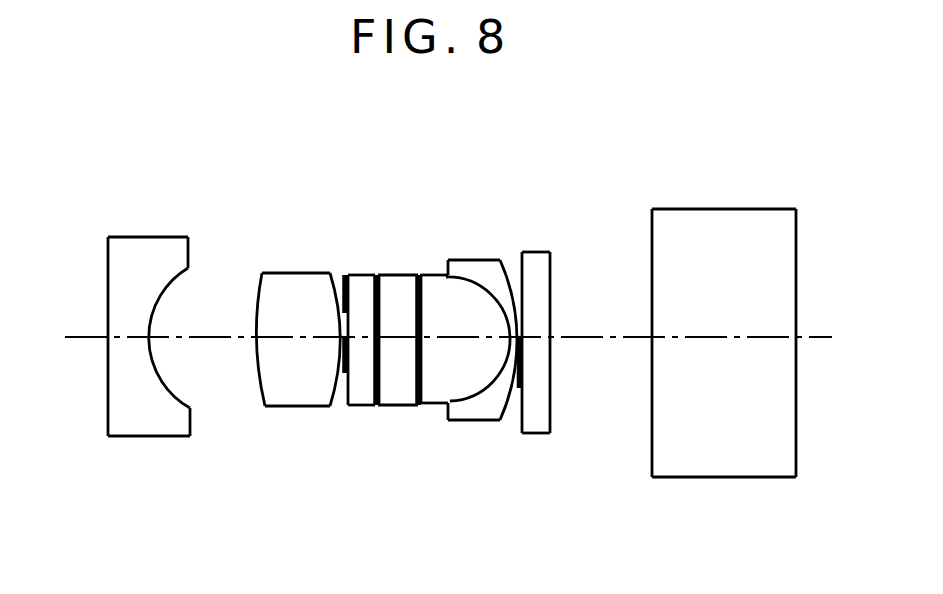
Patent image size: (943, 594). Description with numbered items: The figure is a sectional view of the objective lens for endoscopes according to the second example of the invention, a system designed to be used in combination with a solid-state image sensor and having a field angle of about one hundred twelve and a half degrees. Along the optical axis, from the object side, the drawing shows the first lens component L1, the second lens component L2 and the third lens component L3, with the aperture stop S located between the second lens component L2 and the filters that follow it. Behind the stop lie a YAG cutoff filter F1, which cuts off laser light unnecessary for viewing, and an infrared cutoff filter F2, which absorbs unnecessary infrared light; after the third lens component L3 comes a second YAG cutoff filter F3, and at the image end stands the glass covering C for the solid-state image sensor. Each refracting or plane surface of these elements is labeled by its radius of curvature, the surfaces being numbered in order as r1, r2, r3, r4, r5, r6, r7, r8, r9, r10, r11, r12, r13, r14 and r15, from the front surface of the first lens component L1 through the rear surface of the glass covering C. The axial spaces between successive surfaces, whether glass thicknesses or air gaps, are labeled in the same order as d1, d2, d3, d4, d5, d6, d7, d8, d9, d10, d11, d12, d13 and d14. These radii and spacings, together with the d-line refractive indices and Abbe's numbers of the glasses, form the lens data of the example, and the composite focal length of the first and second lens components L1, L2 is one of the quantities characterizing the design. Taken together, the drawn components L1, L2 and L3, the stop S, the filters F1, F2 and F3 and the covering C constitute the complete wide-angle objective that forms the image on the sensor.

The first lens component L1 is at (129, 237).
The second lens component L2 is at (282, 273).
The third lens component L3 is at (458, 260).
The aperture stop S is at (344, 374).
The YAG cutoff filter F1 is at (355, 406).
The infrared cutoff filter F2 is at (412, 408).
The YAG cutoff filter F3 is at (537, 434).
The glass covering C is at (724, 467).
The radius of curvature of first lens surface r1 is at (107, 259).
The radius of curvature of second lens surface r2 is at (173, 276).
The radius of curvature of third lens surface r3 is at (258, 291).
The radius of curvature of fourth lens surface r4 is at (329, 297).
The radius of curvature of fifth lens surface r5 is at (345, 275).
The radius of curvature of sixth lens surface r6 is at (374, 292).
The radius of curvature of seventh lens surface r7 is at (380, 290).
The radius of curvature of eighth lens surface r8 is at (417, 292).
The radius of curvature of ninth lens surface r9 is at (424, 293).
The radius of curvature of tenth lens surface r10 is at (470, 287).
The radius of curvature of eleventh lens surface r11 is at (504, 261).
The radius of curvature of twelfth lens surface r12 is at (526, 266).
The radius of curvature of thirteenth lens surface r13 is at (552, 273).
The radius of curvature of fourteenth lens surface r14 is at (650, 237).
The radius of curvature of fifteenth lens surface r15 is at (794, 232).
The first space between lens surfaces d1 is at (128, 360).
The second space between lens surfaces d2 is at (202, 360).
The third space between lens surfaces d3 is at (298, 360).
The fourth space between lens surfaces d4 is at (341, 406).
The fifth space between lens surfaces d5 is at (364, 406).
The sixth space between lens surfaces d6 is at (377, 407).
The seventh space between lens surfaces d7 is at (398, 360).
The eighth space between lens surfaces d8 is at (420, 407).
The ninth space between lens surfaces d9 is at (455, 364).
The tenth space between lens surfaces d10 is at (508, 369).
The eleventh space between lens surfaces d11 is at (519, 388).
The twelfth space between lens surfaces d12 is at (547, 369).
The thirteenth space between lens surfaces d13 is at (601, 364).
The fourteenth space between lens surfaces d14 is at (724, 362).